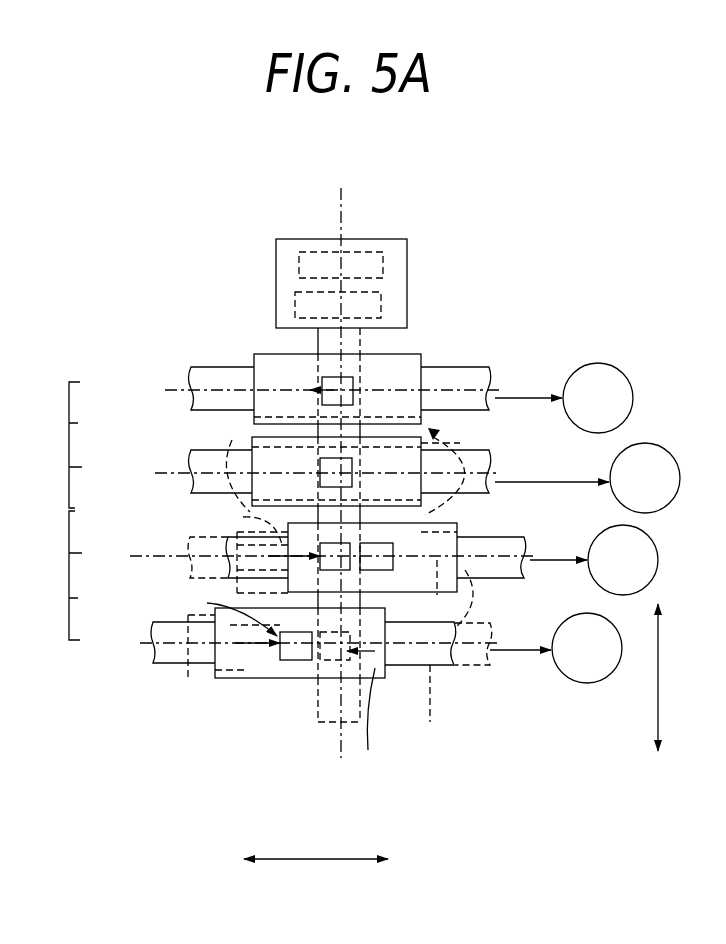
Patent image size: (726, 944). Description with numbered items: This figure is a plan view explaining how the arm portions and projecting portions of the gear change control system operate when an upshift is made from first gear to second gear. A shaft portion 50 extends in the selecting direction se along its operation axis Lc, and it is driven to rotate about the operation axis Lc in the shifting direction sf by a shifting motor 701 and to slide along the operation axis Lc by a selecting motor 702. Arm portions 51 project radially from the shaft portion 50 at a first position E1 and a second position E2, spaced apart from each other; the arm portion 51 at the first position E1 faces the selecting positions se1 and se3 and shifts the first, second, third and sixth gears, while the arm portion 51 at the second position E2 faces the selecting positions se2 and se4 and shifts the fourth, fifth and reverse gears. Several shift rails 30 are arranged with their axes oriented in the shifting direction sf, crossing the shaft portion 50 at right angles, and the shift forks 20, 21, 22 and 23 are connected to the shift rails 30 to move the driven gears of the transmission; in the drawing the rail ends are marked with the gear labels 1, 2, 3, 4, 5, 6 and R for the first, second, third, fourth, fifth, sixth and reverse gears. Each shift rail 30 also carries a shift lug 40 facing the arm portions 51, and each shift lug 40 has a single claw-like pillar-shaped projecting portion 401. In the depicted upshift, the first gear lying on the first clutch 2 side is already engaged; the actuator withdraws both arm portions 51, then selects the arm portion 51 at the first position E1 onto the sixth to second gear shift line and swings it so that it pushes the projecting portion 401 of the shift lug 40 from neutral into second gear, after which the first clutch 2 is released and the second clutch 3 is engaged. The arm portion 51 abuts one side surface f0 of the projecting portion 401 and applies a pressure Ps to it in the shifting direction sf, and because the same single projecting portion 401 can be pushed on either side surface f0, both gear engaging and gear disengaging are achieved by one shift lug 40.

The operation axis Lc is at (343, 225).
The shifting motor 701 is at (392, 263).
The selecting motor 702 is at (393, 310).
The shift rail 30 is at (470, 370).
The shaft portion 50 is at (308, 700).
The selecting position Se4 se4 is at (292, 389).
The fifth port 5 is at (472, 381).
The shift fork 23 is at (564, 398).
The selecting position Se2 se2 is at (292, 471).
The fourth port 4 is at (203, 469).
The rotation direction R is at (470, 469).
The shift fork 22 is at (587, 478).
The selecting position Se3 se3 is at (310, 559).
The sixth port 6 is at (213, 551).
The first clutch 2 is at (505, 547).
The shift fork 20 is at (594, 560).
The selecting position Se1 se1 is at (291, 644).
The shift lug 40 is at (385, 672).
The pillar-shaped projecting portion 401 is at (320, 543).
The side surface of the pillar-shaped projecting portion f0 is at (230, 609).
The first port 1 is at (171, 636).
The second clutch 3 is at (457, 628).
The shift fork 21 is at (556, 648).
The arm portion 51 is at (230, 442).
The pressure Ps is at (243, 520).
The second position E2 is at (56, 445).
The first position E1 is at (56, 575).
The selecting direction se is at (660, 662).
The shifting direction sf is at (305, 858).